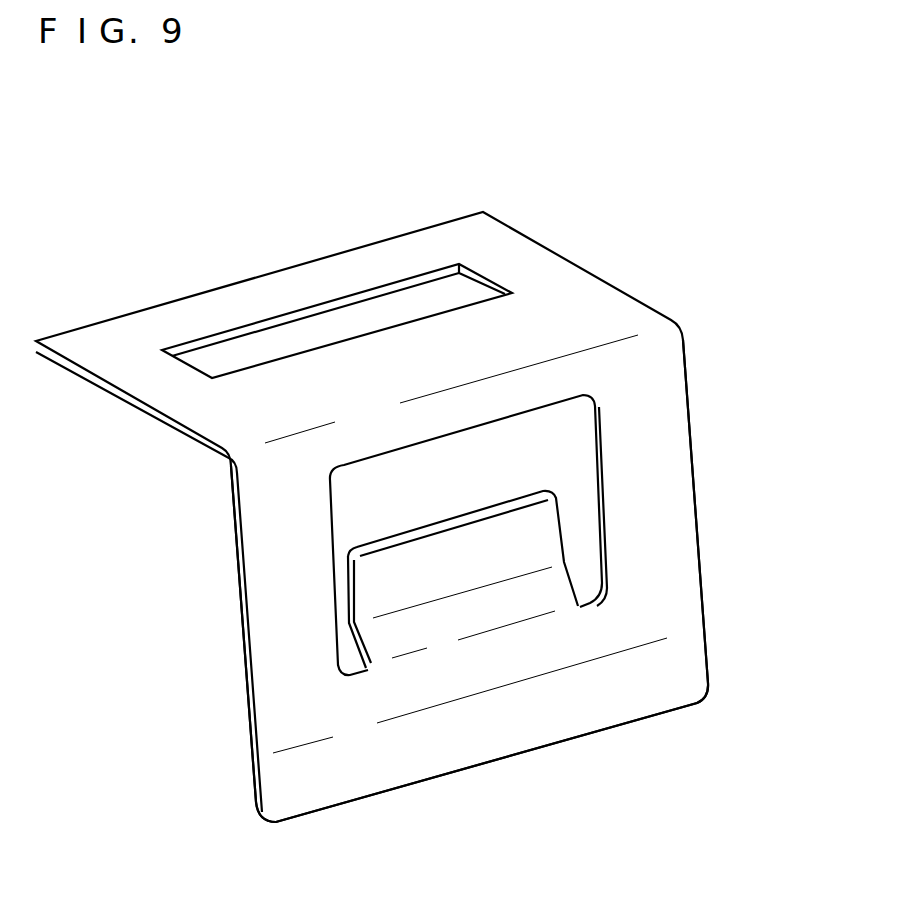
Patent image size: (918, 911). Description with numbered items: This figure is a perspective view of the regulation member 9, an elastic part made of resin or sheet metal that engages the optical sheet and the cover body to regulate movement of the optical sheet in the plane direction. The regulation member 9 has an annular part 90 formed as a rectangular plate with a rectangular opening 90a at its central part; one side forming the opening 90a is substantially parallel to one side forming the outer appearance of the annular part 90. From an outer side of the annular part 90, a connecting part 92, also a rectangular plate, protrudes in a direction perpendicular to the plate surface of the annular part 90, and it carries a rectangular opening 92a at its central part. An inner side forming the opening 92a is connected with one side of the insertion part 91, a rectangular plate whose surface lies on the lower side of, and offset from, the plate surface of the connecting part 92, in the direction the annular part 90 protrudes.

The regulation member 9 is at (538, 191).
The annular part 90 is at (568, 278).
The opening 90a is at (336, 302).
The insertion part 91 is at (370, 588).
The connecting part 92 is at (672, 433).
The opening 92a is at (598, 531).